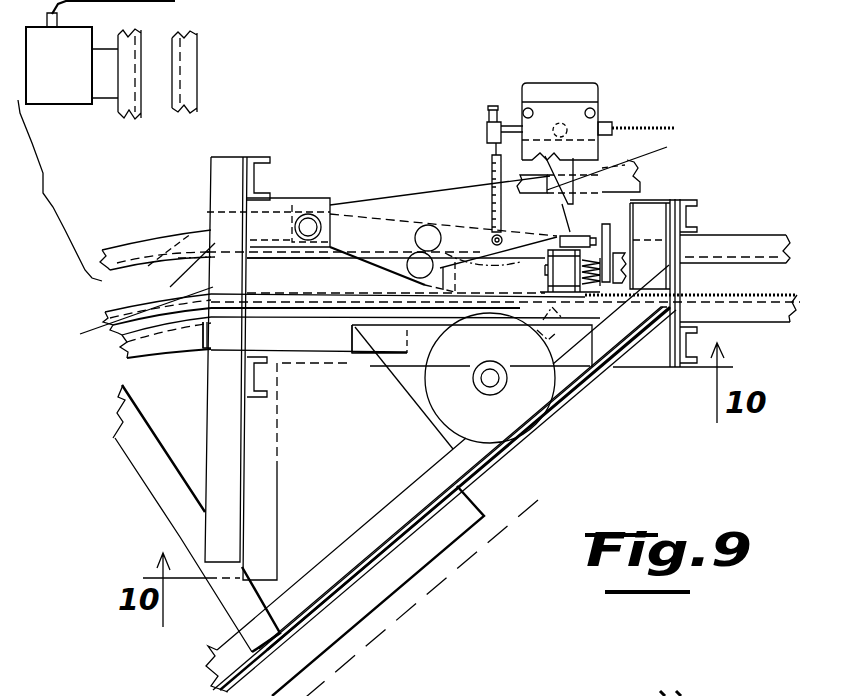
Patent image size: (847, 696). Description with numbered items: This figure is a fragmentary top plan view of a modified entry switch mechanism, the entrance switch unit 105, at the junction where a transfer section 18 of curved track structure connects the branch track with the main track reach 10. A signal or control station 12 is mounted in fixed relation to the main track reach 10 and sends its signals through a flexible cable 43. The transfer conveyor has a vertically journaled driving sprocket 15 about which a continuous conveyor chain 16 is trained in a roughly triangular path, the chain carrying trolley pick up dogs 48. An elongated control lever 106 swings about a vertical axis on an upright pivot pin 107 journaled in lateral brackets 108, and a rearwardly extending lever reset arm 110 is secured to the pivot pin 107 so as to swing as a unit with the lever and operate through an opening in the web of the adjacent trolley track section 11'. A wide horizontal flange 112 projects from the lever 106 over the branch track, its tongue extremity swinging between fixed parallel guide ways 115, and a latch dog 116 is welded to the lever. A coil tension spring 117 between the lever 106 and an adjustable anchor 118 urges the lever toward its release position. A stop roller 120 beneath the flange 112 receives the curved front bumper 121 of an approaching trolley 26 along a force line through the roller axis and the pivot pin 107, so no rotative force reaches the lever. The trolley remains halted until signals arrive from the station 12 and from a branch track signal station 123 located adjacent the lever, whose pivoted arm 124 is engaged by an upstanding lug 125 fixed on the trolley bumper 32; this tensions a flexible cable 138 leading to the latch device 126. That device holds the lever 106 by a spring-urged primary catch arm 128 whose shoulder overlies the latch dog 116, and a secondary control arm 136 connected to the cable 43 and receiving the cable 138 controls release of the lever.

The flexible cable 43 is at (128, 0).
The signal or control station 12 is at (85, 98).
The main track reach 10 is at (188, 73).
The transfer section of curved track structure 18 is at (118, 250).
The lever reset arm 110 is at (212, 212).
The lateral brackets 108 is at (279, 198).
The pivot pin 107 is at (312, 222).
The control lever 106 is at (424, 191).
The stop roller 120 is at (420, 257).
The front bumper 121 is at (412, 289).
The horizontal flange 112 is at (362, 262).
The coil tension spring 117 is at (493, 170).
The anchor 118 is at (487, 122).
The branch track signal station 123 is at (583, 86).
The flexible cable 138 is at (630, 128).
The pivoted arm 124 is at (547, 178).
The upstanding lug 125 is at (620, 160).
The bumper 32 is at (633, 172).
The latch dog 116 is at (606, 226).
The trolley 26 is at (560, 243).
The secondary control arm 136 is at (556, 262).
The primary latch or catch arm 128 is at (620, 257).
The latch device 126 is at (620, 235).
The guide ways 115 is at (650, 198).
The trolley track section 11' is at (738, 270).
The conveyor chain 16 is at (278, 310).
The driving sprockets 15 is at (427, 366).
The trolley pick up lugs or dogs 48 is at (550, 333).
The entrance switch unit 105 is at (556, 420).